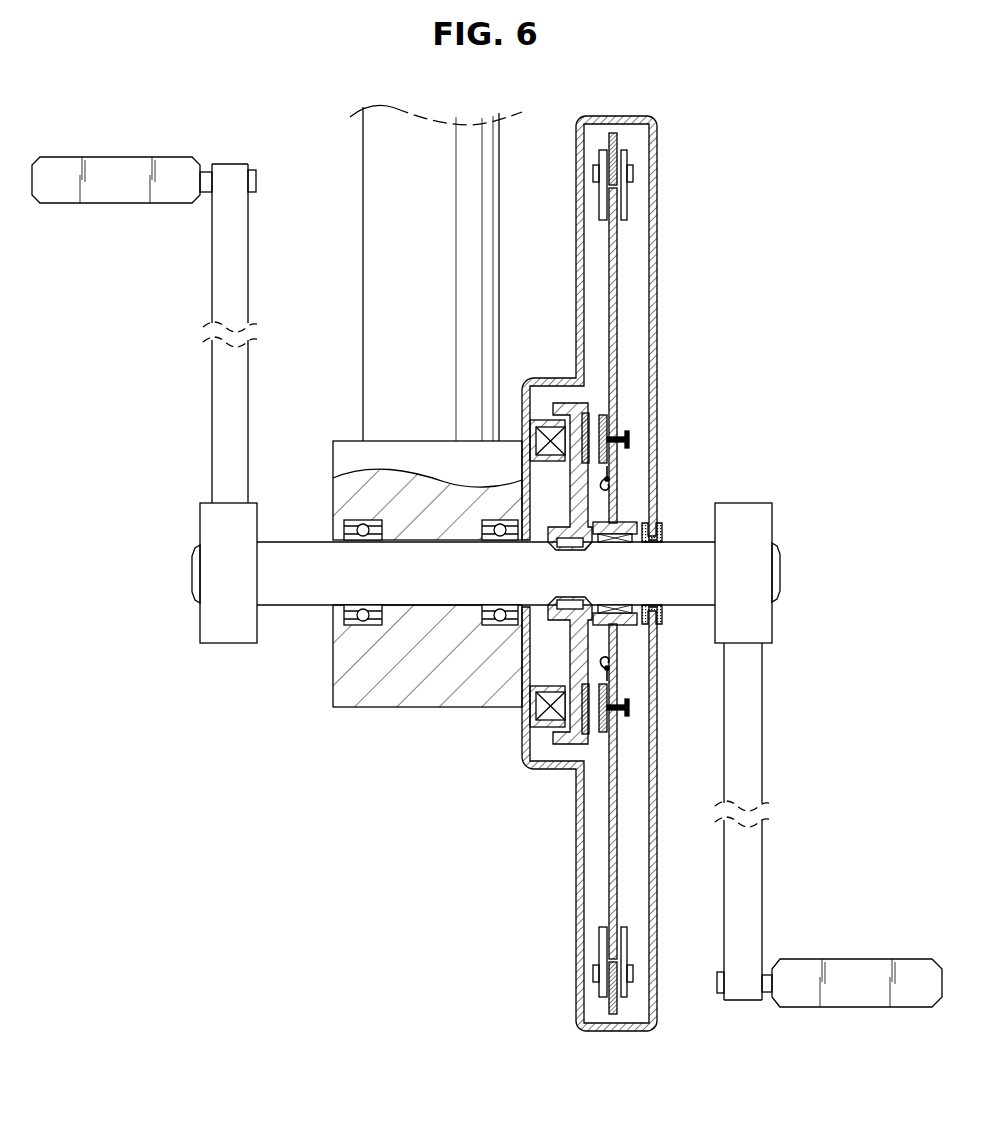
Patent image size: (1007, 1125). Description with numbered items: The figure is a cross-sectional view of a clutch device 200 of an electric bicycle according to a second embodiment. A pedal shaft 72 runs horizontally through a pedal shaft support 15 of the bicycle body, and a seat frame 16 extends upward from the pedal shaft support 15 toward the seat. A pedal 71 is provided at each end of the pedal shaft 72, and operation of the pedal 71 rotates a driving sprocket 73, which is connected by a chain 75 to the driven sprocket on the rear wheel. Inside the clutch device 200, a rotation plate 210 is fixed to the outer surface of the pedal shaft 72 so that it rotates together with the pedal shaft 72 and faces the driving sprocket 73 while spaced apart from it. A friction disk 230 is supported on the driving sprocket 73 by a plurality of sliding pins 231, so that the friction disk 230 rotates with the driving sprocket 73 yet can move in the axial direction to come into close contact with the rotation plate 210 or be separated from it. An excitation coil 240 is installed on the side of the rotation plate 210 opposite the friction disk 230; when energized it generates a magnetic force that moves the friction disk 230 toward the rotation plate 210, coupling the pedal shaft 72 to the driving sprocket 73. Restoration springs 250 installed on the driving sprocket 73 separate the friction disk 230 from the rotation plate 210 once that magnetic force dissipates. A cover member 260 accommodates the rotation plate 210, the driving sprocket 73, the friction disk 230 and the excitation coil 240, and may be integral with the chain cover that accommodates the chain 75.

The pedal shaft support 15 is at (372, 697).
The seat frame 16 is at (473, 223).
The pedal 71 is at (118, 168).
The pedal shaft 72 is at (300, 595).
The driving sprocket 73 is at (613, 272).
The chain 75 is at (614, 140).
The clutch device 200 is at (560, 573).
The rotation plate 210 is at (574, 408).
The friction disk 230 is at (612, 416).
The sliding pins 231 is at (622, 446).
The excitation coil 240 is at (533, 430).
The restoration springs 250 is at (610, 481).
The cover member 260 is at (525, 765).